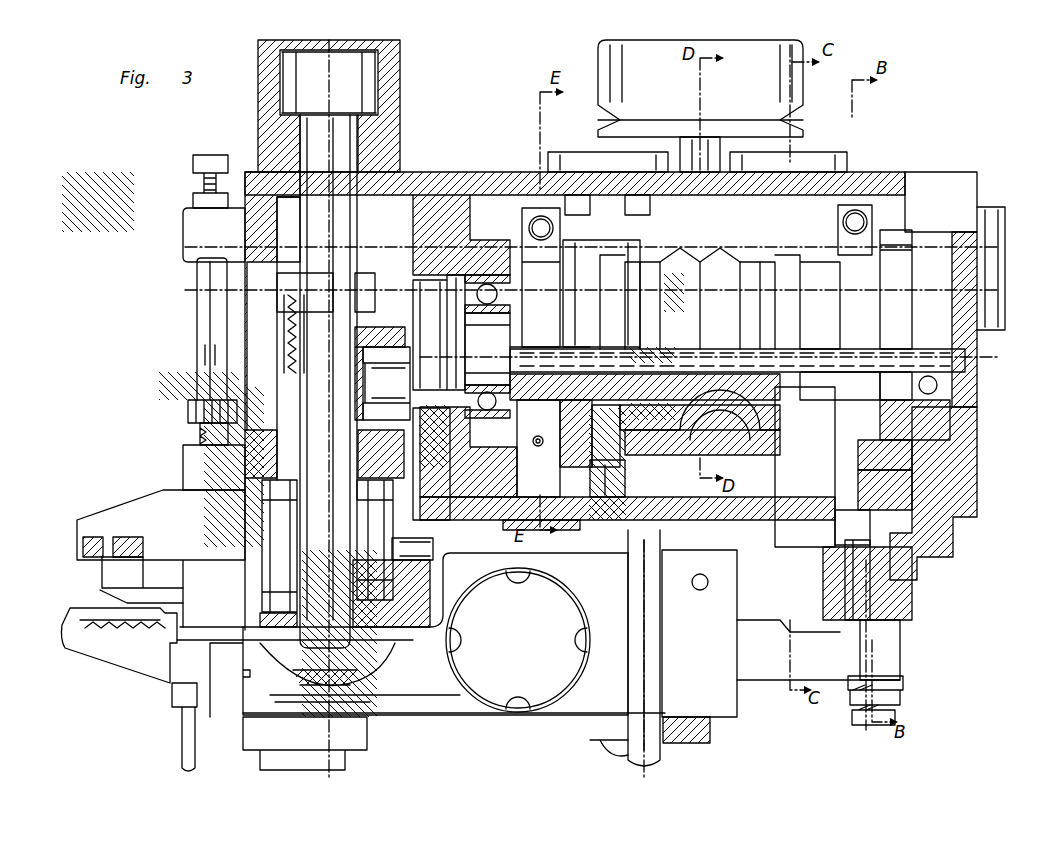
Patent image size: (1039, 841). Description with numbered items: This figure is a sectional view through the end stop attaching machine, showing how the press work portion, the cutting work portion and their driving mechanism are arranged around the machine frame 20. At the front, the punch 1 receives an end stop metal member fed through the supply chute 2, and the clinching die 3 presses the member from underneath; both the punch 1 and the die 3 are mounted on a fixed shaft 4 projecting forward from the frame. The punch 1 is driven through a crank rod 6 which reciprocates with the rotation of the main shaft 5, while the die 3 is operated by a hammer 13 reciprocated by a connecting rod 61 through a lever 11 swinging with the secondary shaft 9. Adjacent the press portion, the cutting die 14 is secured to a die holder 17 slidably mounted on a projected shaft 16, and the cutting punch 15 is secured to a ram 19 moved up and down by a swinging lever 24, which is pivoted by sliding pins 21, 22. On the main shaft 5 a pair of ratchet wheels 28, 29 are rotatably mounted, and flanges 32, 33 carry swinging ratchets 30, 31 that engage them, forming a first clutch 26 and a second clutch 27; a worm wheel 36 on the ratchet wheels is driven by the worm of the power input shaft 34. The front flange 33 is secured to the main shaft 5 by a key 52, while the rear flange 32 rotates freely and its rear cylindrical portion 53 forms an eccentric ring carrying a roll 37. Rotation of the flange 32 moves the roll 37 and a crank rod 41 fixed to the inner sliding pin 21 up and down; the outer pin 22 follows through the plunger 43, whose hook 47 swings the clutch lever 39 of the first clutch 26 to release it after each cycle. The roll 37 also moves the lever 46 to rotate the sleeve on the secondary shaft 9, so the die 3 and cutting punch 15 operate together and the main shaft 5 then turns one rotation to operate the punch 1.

The punch 1 is at (130, 581).
The supply chute 2 is at (90, 545).
The clinching die 3 is at (100, 595).
The fixed shaft 4 is at (434, 548).
The main shaft 5 is at (936, 348).
The crank rod 6 is at (330, 206).
The secondary shaft 9 is at (512, 252).
The lever 11 is at (216, 229).
The hammer 13 is at (196, 430).
The cutting die 14 is at (92, 640).
The cutting punch 15 is at (110, 645).
The projected shaft 16 is at (658, 752).
The die holder 17 is at (156, 667).
The ram 19 is at (420, 675).
The machine frame 20 is at (870, 193).
The sliding pin 21 is at (895, 480).
The sliding pin 22 is at (900, 590).
The lever 24 is at (770, 655).
The first clutch 26 is at (775, 255).
The second clutch 27 is at (614, 275).
The ratchet wheel 28 is at (768, 418).
The ratchet wheel 29 is at (640, 418).
The swinging ratchet 30 is at (772, 450).
The swinging ratchet 31 is at (618, 452).
The rear flange 32 is at (805, 440).
The front flange 33 is at (506, 448).
The power input shaft 34 is at (698, 168).
The worm wheel 36 is at (676, 448).
The roll 37 is at (940, 414).
The clutch lever 39 is at (772, 528).
The crank rod 41 is at (905, 455).
The plunger 43 is at (876, 570).
The lever 46 is at (858, 210).
The hook 47 is at (843, 628).
The key 52 is at (522, 348).
The rear cylindrical portion 53 is at (882, 380).
The connecting rod 61 is at (198, 388).